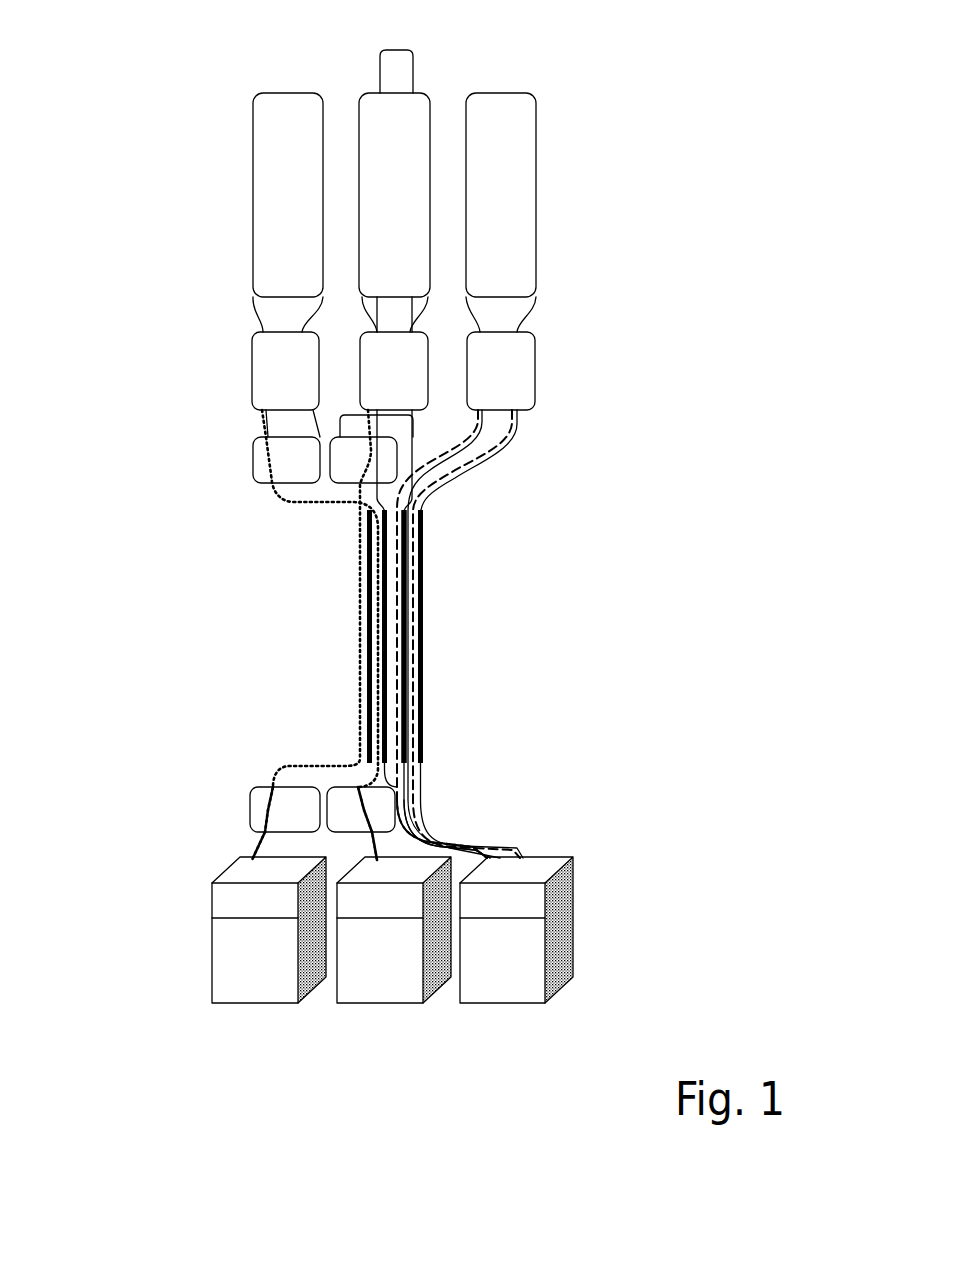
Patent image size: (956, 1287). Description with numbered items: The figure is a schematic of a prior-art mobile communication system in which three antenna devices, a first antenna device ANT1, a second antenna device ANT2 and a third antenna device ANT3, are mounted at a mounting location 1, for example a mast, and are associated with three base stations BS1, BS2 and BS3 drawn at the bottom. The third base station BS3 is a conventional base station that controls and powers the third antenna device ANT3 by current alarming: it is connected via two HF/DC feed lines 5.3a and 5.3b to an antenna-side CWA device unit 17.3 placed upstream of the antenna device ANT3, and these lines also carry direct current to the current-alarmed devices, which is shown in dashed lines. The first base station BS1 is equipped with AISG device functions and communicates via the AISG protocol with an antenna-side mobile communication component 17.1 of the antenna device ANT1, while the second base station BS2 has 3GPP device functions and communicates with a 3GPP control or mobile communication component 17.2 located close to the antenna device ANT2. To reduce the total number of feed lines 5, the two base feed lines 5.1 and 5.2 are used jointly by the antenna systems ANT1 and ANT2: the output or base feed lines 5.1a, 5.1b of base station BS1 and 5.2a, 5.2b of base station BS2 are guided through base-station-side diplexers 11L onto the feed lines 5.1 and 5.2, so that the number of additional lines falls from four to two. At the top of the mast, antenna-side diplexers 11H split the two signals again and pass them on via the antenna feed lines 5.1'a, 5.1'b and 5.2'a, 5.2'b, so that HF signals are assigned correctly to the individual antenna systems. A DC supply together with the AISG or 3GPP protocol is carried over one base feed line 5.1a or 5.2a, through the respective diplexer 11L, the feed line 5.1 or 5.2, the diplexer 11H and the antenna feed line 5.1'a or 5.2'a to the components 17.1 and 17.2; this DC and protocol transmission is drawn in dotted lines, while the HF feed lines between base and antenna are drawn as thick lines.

The first antenna device ANT1 is at (283, 107).
The second antenna device ANT2 is at (410, 112).
The third antenna device ANT3 is at (518, 118).
The mounting location 1 is at (405, 68).
The mobile communication component 17.1 is at (263, 347).
The 3GPP control or mobile communication component 17.2 is at (373, 347).
The antenna-side CWA device unit 17.3 is at (525, 345).
The antenna-side diplexers 11H is at (253, 457).
The base-station-side diplexers 11L is at (340, 798).
The antenna feed line 5.1'a is at (246, 622).
The 3GPP control line antenna side 5.1'b is at (214, 627).
The antenna feed line 5.2'a is at (463, 634).
The CWA control line antenna side 5.2'b is at (515, 625).
The base feed line 5.1 is at (302, 598).
The base feed line 5.2 is at (367, 634).
The feed lines 5 is at (403, 590).
The HF/DC feed line 5.3a is at (518, 636).
The HF/DC feed line 5.3b is at (534, 636).
The output or base feed line 5.1a is at (257, 845).
The output or base feed line 5.1b is at (330, 843).
The output or base feed line 5.2a is at (423, 817).
The output or base feed line 5.2b is at (430, 837).
The first base station BS1 is at (269, 930).
The second base station BS2 is at (394, 930).
The third base station BS3 is at (516, 930).